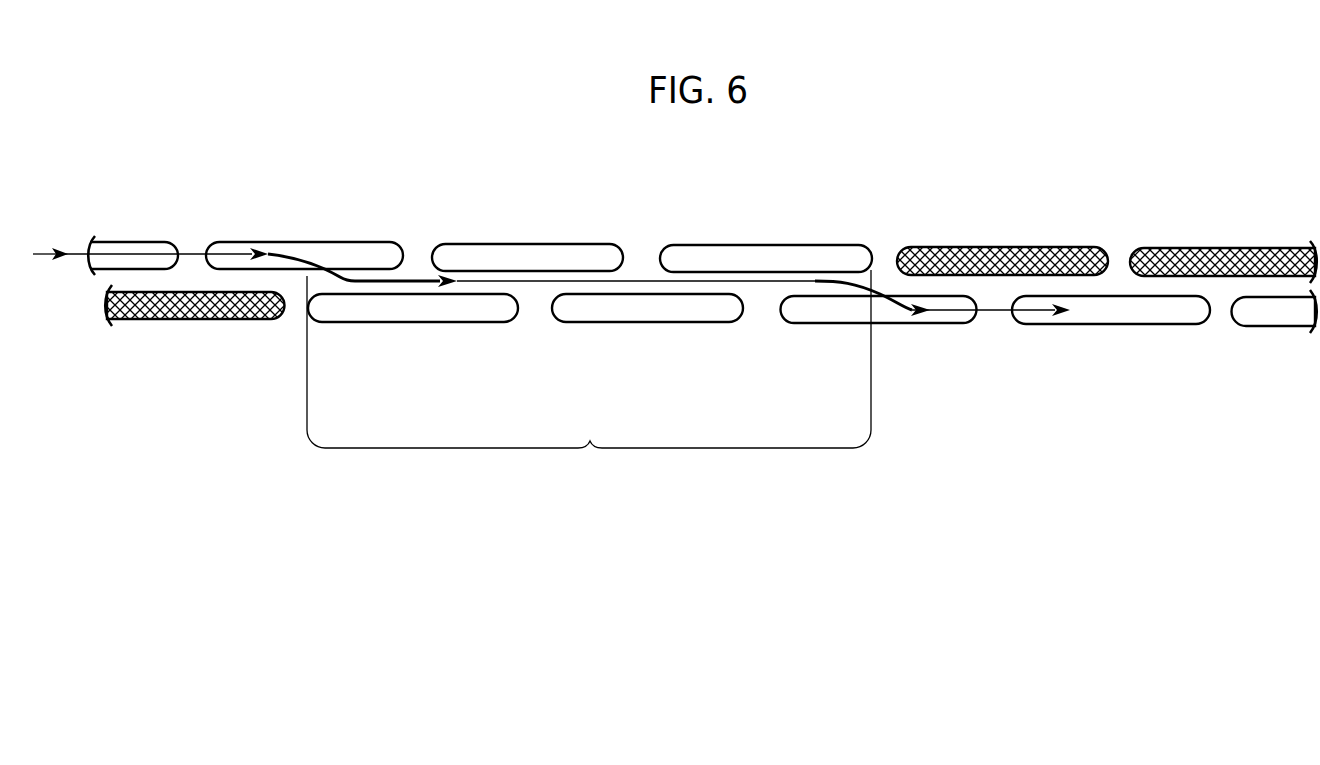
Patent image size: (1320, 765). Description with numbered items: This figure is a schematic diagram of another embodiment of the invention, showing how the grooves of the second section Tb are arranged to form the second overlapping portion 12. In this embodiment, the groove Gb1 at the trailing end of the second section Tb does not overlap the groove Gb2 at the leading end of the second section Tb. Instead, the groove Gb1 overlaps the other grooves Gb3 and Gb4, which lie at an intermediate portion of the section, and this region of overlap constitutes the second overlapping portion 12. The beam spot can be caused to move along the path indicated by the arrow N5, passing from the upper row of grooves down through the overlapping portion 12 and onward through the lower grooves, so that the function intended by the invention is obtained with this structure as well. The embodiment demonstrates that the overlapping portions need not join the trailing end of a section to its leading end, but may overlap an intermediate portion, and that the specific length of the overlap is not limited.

The second section Tb is at (338, 228).
The arrow N5 is at (582, 280).
The groove at the trailing end of the second section Gb1 is at (822, 256).
The groove at the leading end of the second section Gb2 is at (388, 322).
The groove Gb3 is at (713, 312).
The groove Gb4 is at (940, 318).
The second overlapping portion 12 is at (589, 381).